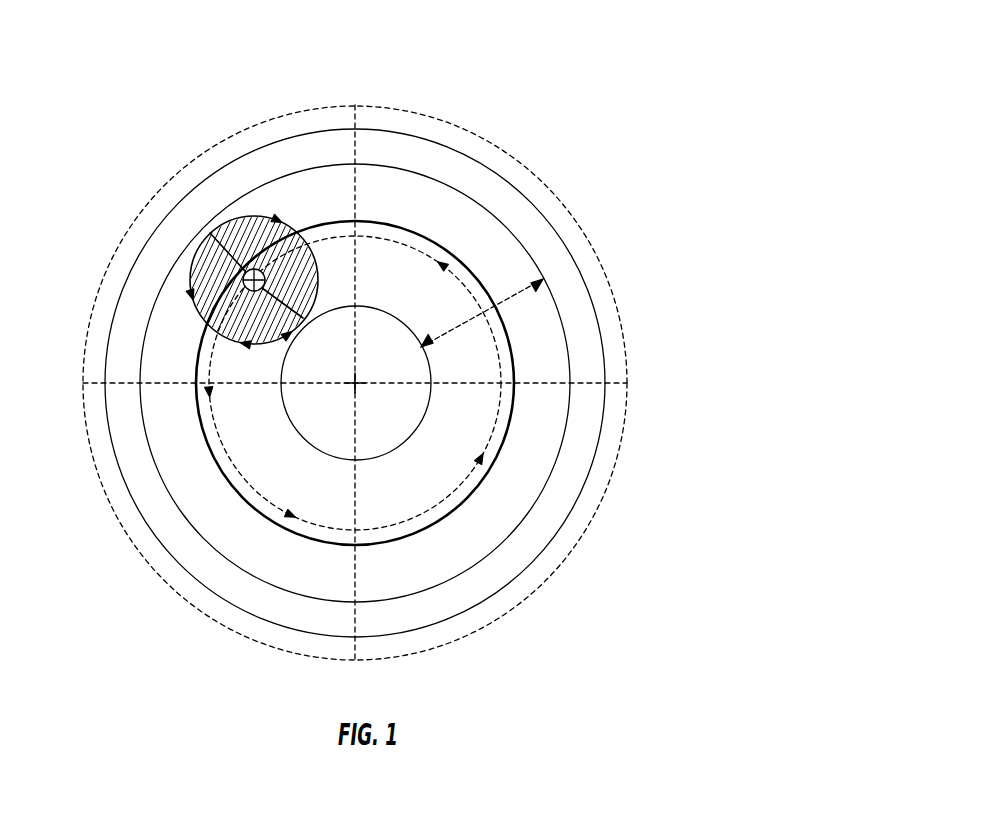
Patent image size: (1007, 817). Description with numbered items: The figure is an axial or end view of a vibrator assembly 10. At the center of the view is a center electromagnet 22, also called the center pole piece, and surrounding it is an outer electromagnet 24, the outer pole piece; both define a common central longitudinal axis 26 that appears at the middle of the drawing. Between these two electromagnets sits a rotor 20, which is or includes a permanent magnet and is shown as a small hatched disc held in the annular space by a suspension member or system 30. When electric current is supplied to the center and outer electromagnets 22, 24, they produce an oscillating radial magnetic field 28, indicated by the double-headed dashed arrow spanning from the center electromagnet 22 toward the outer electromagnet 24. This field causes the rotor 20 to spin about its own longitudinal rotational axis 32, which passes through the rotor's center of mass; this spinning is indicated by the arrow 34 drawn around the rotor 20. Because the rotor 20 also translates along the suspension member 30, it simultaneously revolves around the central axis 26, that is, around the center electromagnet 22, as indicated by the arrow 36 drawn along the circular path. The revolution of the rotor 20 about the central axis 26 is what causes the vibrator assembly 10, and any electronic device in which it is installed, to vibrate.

The vibrator assembly 10 is at (593, 102).
The rotor 20 is at (293, 203).
The center electromagnet 22 is at (430, 371).
The outer electromagnet 24 is at (605, 335).
The central longitudinal axis 26 is at (358, 386).
The oscillating radial magnetic field 28 is at (505, 293).
The suspension member 30 is at (450, 247).
The longitudinal rotational axis 32 is at (247, 290).
The arrow 34 is at (203, 240).
The arrow 36 is at (333, 530).